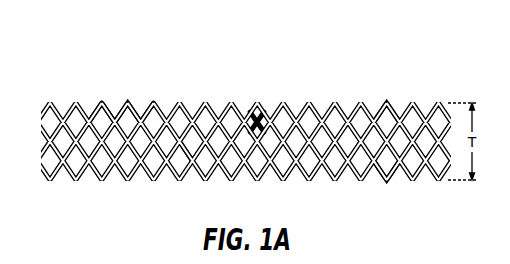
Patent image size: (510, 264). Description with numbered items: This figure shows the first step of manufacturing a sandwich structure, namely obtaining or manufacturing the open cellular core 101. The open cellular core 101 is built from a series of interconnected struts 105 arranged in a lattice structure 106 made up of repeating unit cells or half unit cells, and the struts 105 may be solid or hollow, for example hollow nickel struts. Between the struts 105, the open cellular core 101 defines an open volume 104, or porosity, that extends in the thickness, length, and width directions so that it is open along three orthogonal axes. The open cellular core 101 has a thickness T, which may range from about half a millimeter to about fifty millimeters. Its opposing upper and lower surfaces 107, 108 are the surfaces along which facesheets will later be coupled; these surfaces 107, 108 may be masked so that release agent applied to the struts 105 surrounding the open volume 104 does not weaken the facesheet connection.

The open cellular core 101 is at (362, 70).
The open volume 104 is at (190, 142).
The struts 105 is at (158, 103).
The lattice structure 106 is at (255, 118).
The upper surface 107 is at (392, 104).
The lower surface 108 is at (392, 180).